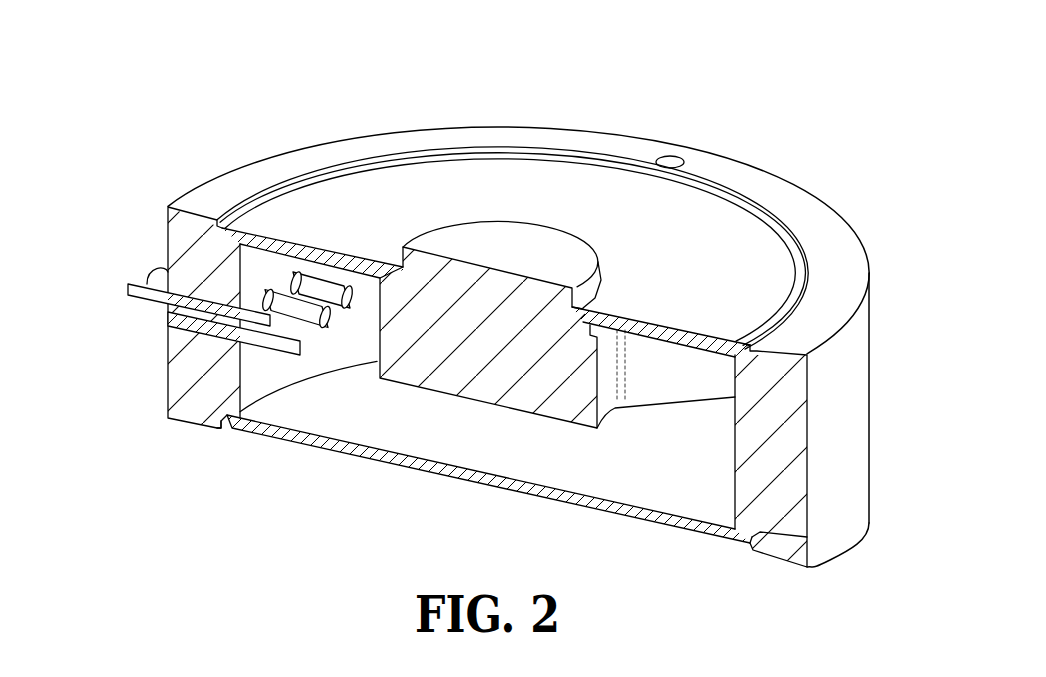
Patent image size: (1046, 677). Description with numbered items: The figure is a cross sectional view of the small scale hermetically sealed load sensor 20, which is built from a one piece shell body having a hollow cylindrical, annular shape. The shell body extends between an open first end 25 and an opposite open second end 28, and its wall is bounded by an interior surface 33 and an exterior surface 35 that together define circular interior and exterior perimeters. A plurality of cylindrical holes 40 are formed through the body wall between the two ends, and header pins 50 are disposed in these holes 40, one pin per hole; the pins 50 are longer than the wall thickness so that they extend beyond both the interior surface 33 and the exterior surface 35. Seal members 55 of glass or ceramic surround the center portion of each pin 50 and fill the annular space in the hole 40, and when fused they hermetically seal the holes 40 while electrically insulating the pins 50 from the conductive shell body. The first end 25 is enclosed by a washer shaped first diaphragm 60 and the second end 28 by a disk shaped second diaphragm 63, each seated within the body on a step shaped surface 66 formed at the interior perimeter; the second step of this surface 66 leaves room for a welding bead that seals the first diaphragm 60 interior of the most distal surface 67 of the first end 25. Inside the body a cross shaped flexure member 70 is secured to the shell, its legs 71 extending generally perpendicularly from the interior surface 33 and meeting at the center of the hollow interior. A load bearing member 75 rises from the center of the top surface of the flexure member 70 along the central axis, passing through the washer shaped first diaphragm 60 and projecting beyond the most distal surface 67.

The small scale hermetically sealed load sensor 20 is at (156, 125).
The open first end 25 is at (855, 321).
The open second end 28 is at (863, 523).
The interior surface 33 is at (262, 383).
The exterior surface 35 is at (857, 383).
The cylindrical holes 40 is at (200, 328).
The header pins 50 is at (128, 297).
The seal members 55 is at (168, 331).
The first diaphragm 60 is at (620, 188).
The second diaphragm 63 is at (313, 450).
The step shaped surface 66 is at (748, 346).
The most distal surface 67 is at (793, 207).
The cross shaped flexure member 70 is at (653, 390).
The legs 71 is at (683, 397).
The load bearing member 75 is at (500, 237).